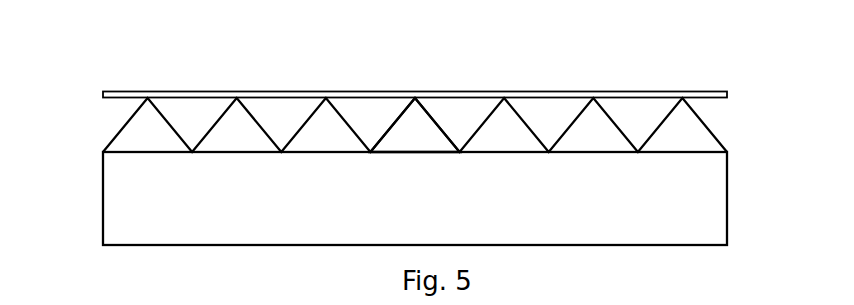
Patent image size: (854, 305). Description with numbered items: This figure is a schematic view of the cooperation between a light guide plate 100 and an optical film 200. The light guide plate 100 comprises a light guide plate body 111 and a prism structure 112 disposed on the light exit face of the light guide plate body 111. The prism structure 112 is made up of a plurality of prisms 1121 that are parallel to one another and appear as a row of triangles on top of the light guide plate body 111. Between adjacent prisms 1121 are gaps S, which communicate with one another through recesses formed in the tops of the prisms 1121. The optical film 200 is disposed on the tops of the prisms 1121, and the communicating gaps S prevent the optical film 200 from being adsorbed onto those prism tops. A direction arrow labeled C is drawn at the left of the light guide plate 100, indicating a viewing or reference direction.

The optical film 200 is at (713, 94).
The light guide plate 100 is at (460, 171).
The prism structure 112 is at (718, 127).
The prism 1121 is at (417, 137).
The light guide plate body 111 is at (776, 132).
The gap S is at (543, 124).
The direction C is at (90, 155).